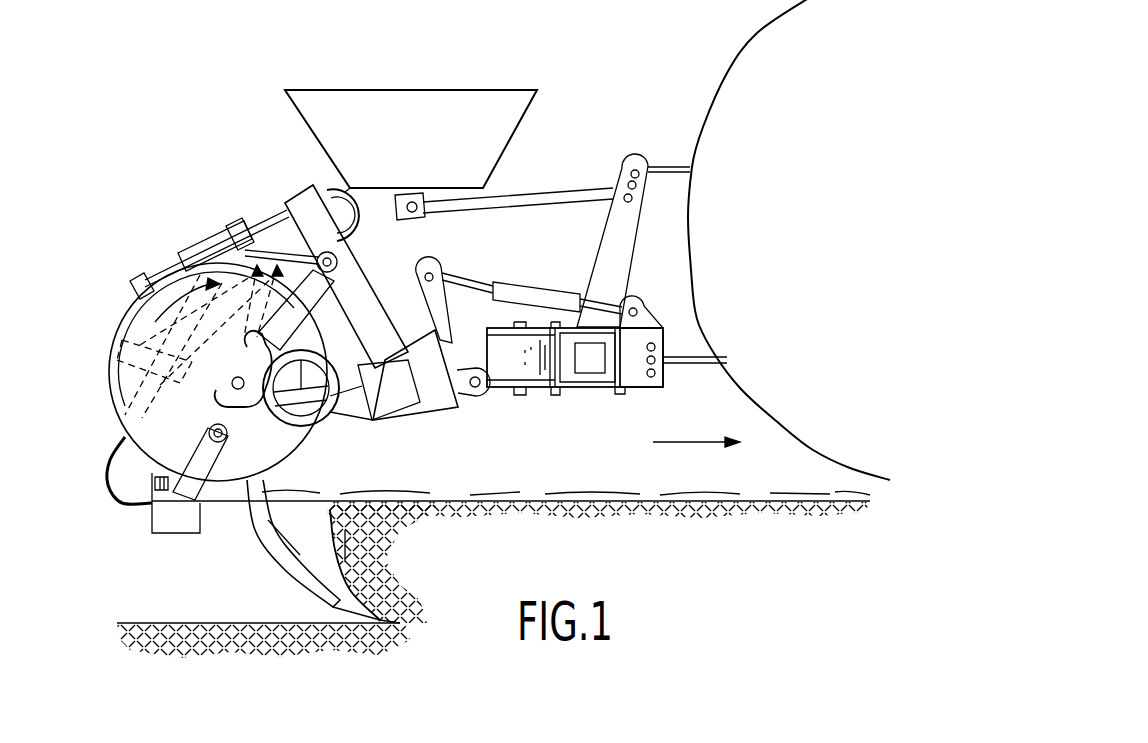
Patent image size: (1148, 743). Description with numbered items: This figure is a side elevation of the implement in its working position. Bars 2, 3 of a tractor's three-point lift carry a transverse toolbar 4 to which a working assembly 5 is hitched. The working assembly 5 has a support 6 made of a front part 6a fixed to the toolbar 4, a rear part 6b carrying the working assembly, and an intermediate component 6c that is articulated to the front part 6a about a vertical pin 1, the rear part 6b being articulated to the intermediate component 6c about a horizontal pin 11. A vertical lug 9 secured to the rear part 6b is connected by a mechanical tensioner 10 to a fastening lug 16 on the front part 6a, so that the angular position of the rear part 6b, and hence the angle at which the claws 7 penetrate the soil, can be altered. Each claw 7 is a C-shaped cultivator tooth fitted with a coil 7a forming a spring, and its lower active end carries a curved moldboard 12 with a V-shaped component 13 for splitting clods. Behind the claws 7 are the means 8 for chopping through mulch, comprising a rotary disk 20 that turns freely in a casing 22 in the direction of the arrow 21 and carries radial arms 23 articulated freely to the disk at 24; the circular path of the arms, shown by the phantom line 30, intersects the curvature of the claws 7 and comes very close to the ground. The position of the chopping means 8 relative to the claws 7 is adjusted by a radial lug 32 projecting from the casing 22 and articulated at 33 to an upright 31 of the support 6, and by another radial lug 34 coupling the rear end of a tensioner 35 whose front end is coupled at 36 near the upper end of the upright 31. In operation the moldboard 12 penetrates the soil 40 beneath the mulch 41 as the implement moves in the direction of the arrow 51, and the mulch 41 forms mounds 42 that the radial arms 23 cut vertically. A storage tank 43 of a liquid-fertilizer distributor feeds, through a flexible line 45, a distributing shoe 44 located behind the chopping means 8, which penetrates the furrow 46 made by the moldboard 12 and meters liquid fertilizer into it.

The vertical pin 1 is at (575, 381).
The bar of the three-point lift 2 is at (542, 213).
The bar of the three-point lift 3 is at (776, 240).
The transverse toolbar 4 is at (633, 378).
The working assembly 5 is at (411, 154).
The support 6 is at (426, 462).
The front part 6a is at (590, 390).
The rear part 6b is at (424, 391).
The intermediate component 6c is at (521, 380).
The claw 7 is at (291, 543).
The coil 7a is at (240, 369).
The means for chopping through mulch 8 is at (110, 221).
The vertical lug 9 is at (434, 282).
The mechanical tensioner 10 is at (532, 271).
The horizontal pin 11 is at (465, 338).
The curved moldboard 12 is at (391, 593).
The V-shaped component 13 is at (383, 562).
The fastening lug 16 is at (651, 284).
The rotary disk 20 is at (318, 410).
The arrow 21 is at (187, 303).
The casing 22 is at (204, 372).
The radial arm 23 is at (197, 485).
The articulation of radial arms 24 is at (207, 411).
The phantom line 30 is at (372, 443).
The upright 31 is at (339, 254).
The radial lug 32 is at (291, 300).
The articulation 33 is at (355, 217).
The radial lug 34 is at (147, 259).
The tensioner 35 is at (211, 224).
The coupling point 36 is at (217, 219).
The soil 40 is at (511, 479).
The mulch 41 is at (650, 471).
The mound 42 is at (330, 562).
The storage tank 43 is at (411, 94).
The distributing shoe 44 is at (176, 522).
The flexible line 45 is at (111, 497).
The furrow 46 is at (263, 656).
The arrow 51 is at (696, 411).